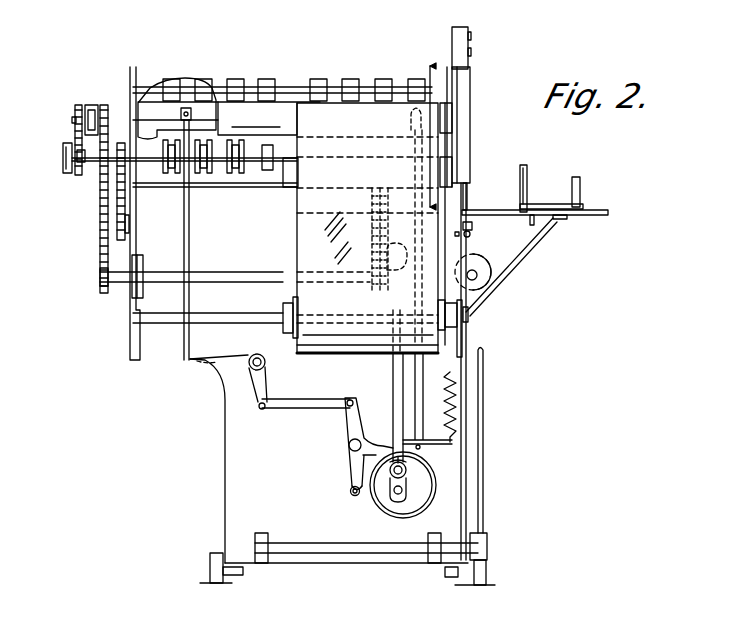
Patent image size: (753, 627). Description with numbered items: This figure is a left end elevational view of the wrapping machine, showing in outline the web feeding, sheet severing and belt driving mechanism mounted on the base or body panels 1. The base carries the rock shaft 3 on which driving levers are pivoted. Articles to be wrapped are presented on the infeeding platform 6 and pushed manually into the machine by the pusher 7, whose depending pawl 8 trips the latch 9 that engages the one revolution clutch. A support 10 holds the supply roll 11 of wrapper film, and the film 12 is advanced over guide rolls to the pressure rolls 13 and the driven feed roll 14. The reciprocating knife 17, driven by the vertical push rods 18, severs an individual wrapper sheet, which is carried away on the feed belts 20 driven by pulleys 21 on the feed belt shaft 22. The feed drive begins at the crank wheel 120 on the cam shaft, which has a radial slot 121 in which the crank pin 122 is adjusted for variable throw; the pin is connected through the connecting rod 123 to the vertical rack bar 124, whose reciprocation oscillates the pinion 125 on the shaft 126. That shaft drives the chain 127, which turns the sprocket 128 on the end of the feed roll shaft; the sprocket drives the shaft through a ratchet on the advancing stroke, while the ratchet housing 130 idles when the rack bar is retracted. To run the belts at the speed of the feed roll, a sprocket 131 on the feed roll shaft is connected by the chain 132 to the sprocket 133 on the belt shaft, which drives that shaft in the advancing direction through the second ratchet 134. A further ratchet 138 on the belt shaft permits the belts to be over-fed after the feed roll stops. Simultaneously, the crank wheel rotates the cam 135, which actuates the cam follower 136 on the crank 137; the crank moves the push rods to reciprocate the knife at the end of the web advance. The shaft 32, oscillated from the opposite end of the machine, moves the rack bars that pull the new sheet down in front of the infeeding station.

The base or body panels 1 is at (243, 524).
The rock shaft 3 is at (328, 440).
The infeeding platform 6 is at (481, 210).
The pusher 7 is at (526, 172).
The depending pawl 8 is at (532, 231).
The latch 9 is at (472, 228).
The support 10 is at (461, 333).
The supply roll 11 is at (293, 345).
The film 12 is at (308, 258).
The pressure rolls 13 is at (266, 80).
The feed roll 14 is at (283, 118).
The reciprocating knife 17 is at (178, 110).
The push rods 18 is at (184, 250).
The feed belts 20 is at (172, 162).
The pulleys 21 is at (205, 162).
The feed belt shaft 22 is at (242, 162).
The shaft 32 is at (477, 276).
The crank wheel 120 is at (436, 480).
The radial slot 121 is at (402, 490).
The crank pin 122 is at (406, 469).
The connecting rod 123 is at (393, 395).
The rack bar 124 is at (300, 213).
The pinion 125 is at (368, 284).
The shaft 126 is at (234, 272).
The chain 127 is at (100, 255).
The sprocket 128 is at (104, 105).
The ratchet housing 130 is at (88, 105).
The sprocket 131 is at (77, 110).
The chain 132 is at (75, 137).
The sprocket 133 is at (77, 155).
The second ratchet 134 is at (67, 165).
The cam 135 is at (433, 500).
The cam follower 136 is at (350, 492).
The crank 137 is at (345, 462).
The second ratchet 138 is at (100, 176).